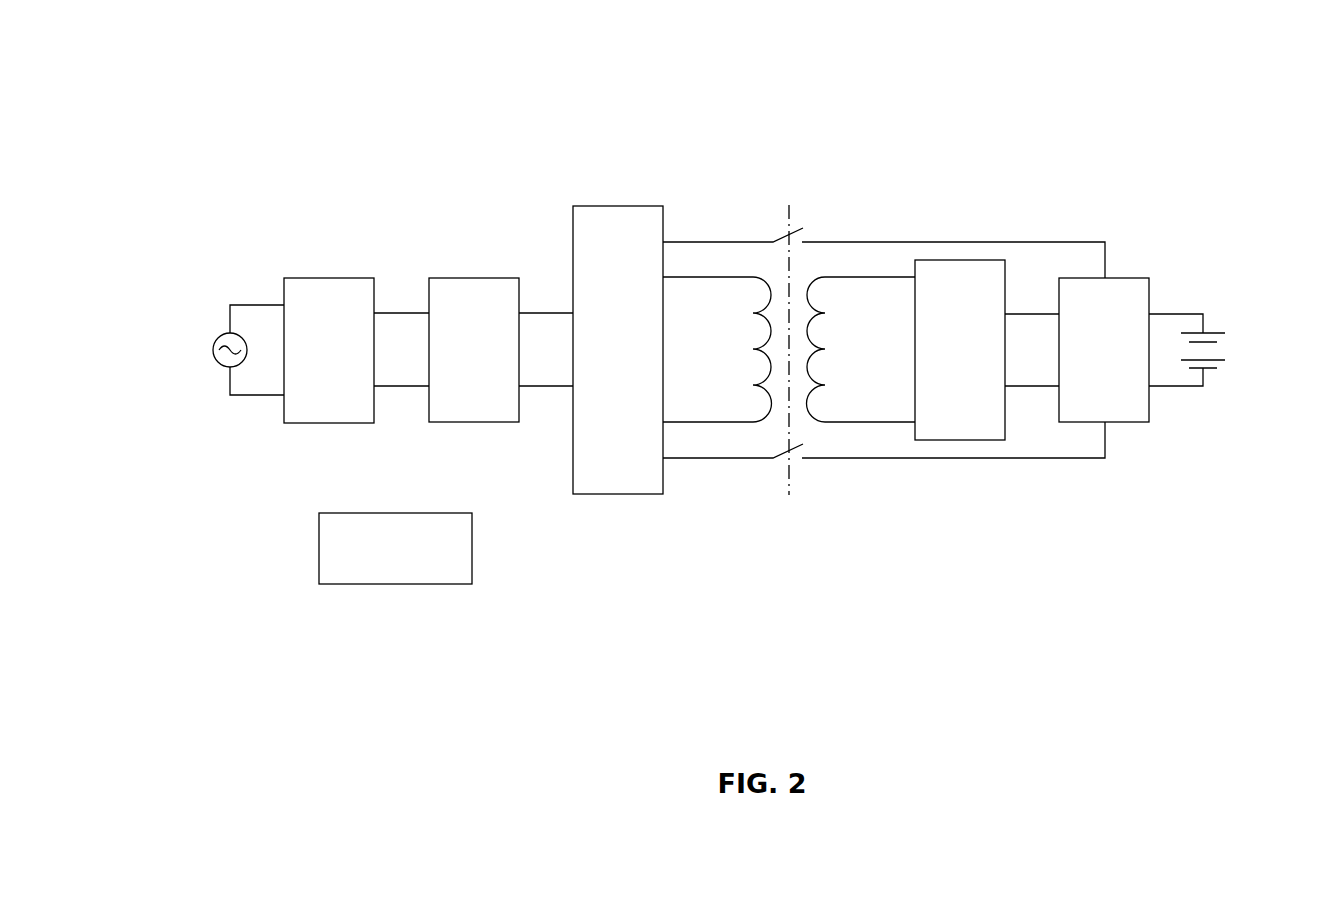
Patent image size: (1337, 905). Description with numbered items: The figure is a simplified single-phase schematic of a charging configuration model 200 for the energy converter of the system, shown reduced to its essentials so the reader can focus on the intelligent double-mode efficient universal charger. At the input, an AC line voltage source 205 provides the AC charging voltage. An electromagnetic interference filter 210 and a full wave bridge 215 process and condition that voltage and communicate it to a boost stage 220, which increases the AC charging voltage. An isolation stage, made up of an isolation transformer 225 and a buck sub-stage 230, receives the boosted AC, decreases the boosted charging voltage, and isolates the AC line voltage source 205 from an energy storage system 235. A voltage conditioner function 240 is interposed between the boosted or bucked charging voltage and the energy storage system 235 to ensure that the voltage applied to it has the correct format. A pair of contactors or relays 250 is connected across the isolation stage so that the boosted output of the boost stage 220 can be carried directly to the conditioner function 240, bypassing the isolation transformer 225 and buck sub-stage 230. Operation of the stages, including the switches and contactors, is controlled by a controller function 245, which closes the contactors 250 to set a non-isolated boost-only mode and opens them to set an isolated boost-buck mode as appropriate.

The charging configuration model 200 is at (340, 113).
The AC line voltage source 205 is at (212, 323).
The electromagnetic interference (EMI) filter 210 is at (329, 350).
The full wave bridge 215 is at (474, 350).
The boost stage 220 is at (618, 350).
The isolation transformer 225 is at (860, 277).
The buck sub-stage 230 is at (960, 350).
The energy storage system 235 is at (1217, 323).
The voltage conditioner function 240 is at (1104, 350).
The controller function 245 is at (395, 548).
The contactors/relays 250 is at (782, 235).